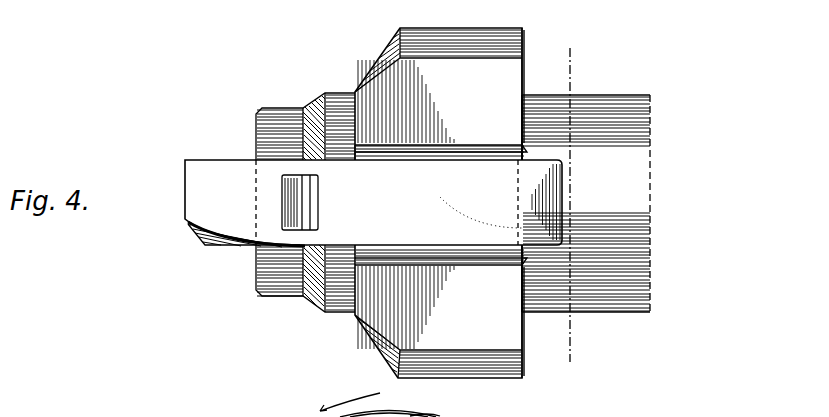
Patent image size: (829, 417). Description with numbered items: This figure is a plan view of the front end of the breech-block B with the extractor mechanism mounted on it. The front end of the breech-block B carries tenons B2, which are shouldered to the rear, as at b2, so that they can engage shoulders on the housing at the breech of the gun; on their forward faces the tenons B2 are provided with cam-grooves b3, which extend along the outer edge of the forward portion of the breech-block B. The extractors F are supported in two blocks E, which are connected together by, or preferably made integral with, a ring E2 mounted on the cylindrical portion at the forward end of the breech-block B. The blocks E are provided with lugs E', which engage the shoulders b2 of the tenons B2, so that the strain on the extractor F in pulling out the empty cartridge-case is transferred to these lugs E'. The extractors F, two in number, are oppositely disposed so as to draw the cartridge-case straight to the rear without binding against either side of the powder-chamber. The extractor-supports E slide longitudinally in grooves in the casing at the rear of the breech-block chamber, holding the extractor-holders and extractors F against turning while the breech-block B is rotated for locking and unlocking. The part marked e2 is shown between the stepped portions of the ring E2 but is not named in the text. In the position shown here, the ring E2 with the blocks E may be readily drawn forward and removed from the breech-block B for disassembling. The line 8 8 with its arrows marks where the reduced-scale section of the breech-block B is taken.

The breech-block B is at (586, 203).
The tenons B2 is at (423, 222).
The shoulders of tenons b2 is at (523, 80).
The cam-grooves b3 is at (438, 414).
The blocks E is at (373, 203).
The lugs E' is at (539, 202).
The ring E2 is at (291, 116).
The conical portion of collar e2 is at (313, 100).
The extractors F is at (295, 198).
The section line 8 is at (608, 42).